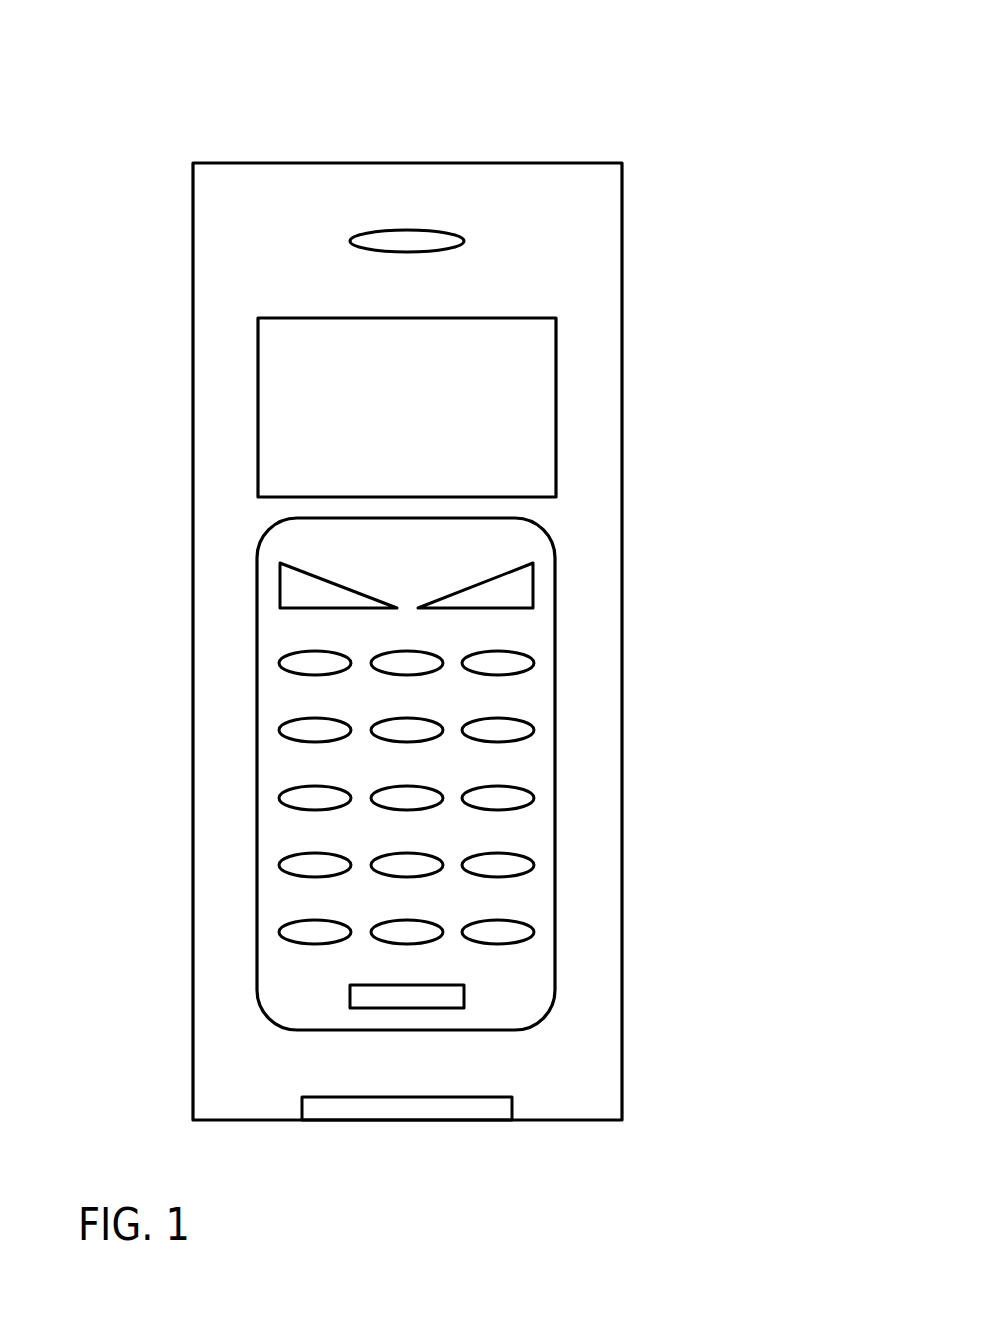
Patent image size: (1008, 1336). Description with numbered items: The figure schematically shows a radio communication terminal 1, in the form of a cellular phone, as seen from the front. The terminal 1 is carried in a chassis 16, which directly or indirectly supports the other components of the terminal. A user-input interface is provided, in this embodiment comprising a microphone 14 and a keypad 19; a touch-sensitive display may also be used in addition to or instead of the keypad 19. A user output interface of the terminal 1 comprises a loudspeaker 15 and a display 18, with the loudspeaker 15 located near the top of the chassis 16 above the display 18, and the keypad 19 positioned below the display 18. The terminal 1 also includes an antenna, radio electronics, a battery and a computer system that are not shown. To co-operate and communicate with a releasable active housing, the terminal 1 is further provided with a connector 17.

The radio communication terminal 1 is at (800, 142).
The microphone 14 is at (464, 1003).
The loudspeaker 15 is at (410, 230).
The chassis 16 is at (185, 540).
The connector 17 is at (397, 1120).
The display 18 is at (556, 382).
The keypad 19 is at (555, 740).